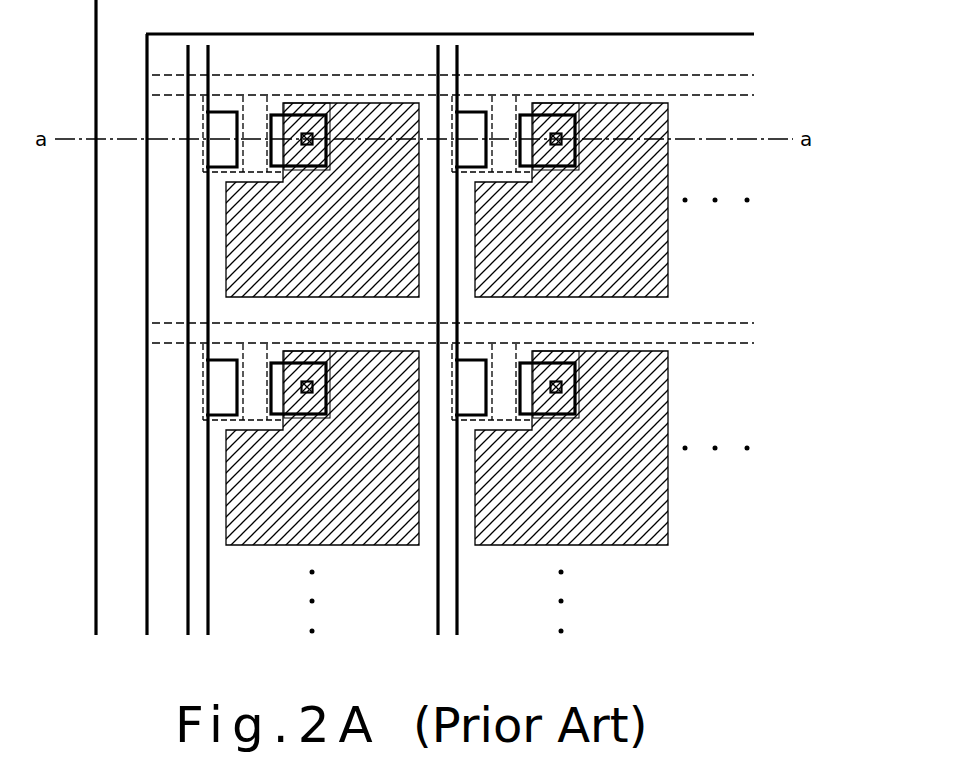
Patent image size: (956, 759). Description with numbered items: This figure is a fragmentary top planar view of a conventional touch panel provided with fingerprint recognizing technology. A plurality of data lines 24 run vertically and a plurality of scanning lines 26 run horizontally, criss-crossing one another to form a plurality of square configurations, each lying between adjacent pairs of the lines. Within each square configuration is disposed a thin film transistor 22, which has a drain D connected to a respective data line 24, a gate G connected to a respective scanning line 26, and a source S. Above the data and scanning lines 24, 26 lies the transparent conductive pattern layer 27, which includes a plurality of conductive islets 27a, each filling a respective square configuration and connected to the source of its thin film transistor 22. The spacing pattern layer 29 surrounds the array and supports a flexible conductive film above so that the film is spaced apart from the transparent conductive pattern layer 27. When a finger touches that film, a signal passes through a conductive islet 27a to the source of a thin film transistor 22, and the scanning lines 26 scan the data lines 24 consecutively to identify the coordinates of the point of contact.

The thin film transistor 22 is at (205, 171).
The data line 24 is at (197, 524).
The scanning line 26 is at (592, 82).
The transparent conductive pattern layer 27 is at (655, 272).
The conductive islet 27a is at (387, 244).
The spacing pattern layer 29 is at (142, 20).